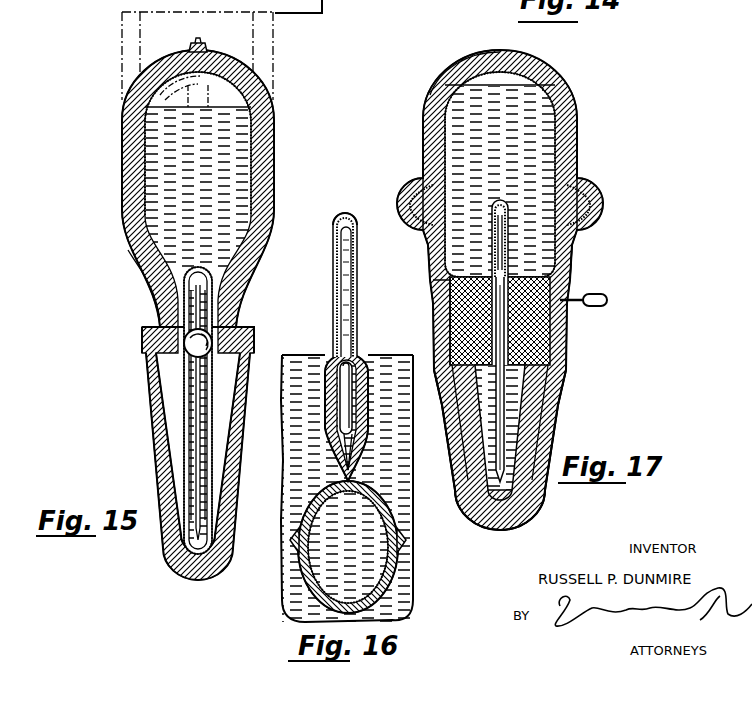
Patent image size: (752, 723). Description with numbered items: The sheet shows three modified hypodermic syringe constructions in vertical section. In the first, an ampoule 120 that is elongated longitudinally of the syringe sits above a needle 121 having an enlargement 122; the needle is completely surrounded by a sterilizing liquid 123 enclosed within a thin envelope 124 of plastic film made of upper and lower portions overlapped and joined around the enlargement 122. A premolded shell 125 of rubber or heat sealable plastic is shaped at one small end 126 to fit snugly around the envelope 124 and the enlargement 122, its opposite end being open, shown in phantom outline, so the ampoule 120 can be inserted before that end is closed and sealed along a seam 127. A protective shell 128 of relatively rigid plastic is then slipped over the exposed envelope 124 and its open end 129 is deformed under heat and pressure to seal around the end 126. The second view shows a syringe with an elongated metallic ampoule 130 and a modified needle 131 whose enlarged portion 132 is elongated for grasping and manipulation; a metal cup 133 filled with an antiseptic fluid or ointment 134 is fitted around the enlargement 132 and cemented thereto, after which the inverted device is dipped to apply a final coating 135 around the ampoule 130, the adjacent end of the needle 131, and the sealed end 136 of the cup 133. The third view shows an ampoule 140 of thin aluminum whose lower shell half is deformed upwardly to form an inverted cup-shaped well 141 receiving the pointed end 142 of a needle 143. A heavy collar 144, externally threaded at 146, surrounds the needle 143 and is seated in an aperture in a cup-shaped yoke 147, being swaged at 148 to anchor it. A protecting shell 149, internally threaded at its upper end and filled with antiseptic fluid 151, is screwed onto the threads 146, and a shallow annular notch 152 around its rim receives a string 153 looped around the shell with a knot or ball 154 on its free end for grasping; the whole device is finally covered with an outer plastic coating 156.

In FIG. 15, the ampoule 120 is at (122, 197).
In FIG. 15, the needle 121 is at (200, 446).
In FIG. 15, the enlargement 122 is at (186, 356).
In FIG. 15, the sterilizing liquid 123 is at (183, 406).
In FIG. 15, the envelope 124 is at (178, 471).
In FIG. 15, the premolded shell 125 is at (272, 132).
In FIG. 15, the small end of shell 126 is at (162, 322).
In FIG. 15, the seam 127 is at (197, 42).
In FIG. 15, the protective shell 128 is at (179, 565).
In FIG. 15, the open end of protective shell 129 is at (143, 338).
In FIG. 16, the metallic ampoule 130 is at (400, 531).
In FIG. 16, the needle 131 is at (341, 256).
In FIG. 16, the enlarged portion of needle 132 is at (338, 385).
In FIG. 16, the cup 133 is at (333, 306).
In FIG. 16, the antiseptic fluid or ointment 134 is at (342, 264).
In FIG. 16, the final coating 135 is at (313, 580).
In FIG. 16, the sealed end of cup 136 is at (366, 360).
In FIG. 17, the ampoule 140 is at (578, 122).
In FIG. 17, the inverted cup-shaped well 141 is at (583, 244).
In FIG. 17, the pointed end of needle 142 is at (515, 205).
In FIG. 17, the needle 143 is at (558, 394).
In FIG. 17, the collar 144 is at (447, 284).
In FIG. 17, the threaded portion 146 is at (540, 341).
In FIG. 17, the cup-shaped yoke 147 is at (400, 212).
In FIG. 17, the swaged portion 148 is at (566, 271).
In FIG. 17, the protecting shell 149 is at (548, 434).
In FIG. 17, the antiseptic fluid 151 is at (465, 466).
In FIG. 17, the annular notch 152 is at (454, 302).
In FIG. 17, the string 153 is at (588, 292).
In FIG. 17, the knot or ball 154 is at (604, 307).
In FIG. 17, the outer plastic coating 156 is at (450, 78).